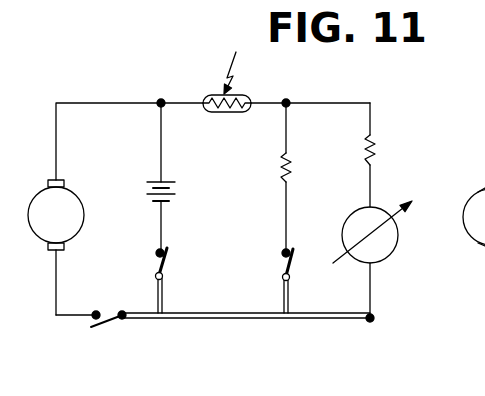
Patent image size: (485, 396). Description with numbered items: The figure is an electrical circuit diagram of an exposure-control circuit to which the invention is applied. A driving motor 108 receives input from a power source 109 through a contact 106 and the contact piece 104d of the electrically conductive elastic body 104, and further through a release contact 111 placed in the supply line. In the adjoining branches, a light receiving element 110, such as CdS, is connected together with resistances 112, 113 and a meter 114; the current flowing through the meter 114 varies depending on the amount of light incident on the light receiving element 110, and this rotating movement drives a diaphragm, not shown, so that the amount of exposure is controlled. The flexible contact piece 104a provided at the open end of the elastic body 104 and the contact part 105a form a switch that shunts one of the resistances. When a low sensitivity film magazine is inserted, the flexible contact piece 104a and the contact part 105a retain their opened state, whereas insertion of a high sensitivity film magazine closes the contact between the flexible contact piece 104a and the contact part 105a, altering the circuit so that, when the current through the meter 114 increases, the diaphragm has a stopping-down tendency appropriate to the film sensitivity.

The elastic body 104 is at (208, 319).
The flexible contact piece 104a is at (295, 263).
The contact piece 104d is at (166, 258).
The contact part 105a is at (283, 251).
The contact 106 is at (157, 251).
The driving motor 108 is at (70, 218).
The power source 109 is at (166, 181).
The light receiving element 110 is at (213, 94).
The release contact 111 is at (93, 320).
The resistance 112 is at (290, 167).
The resistance 113 is at (375, 157).
The meter 114 is at (392, 252).